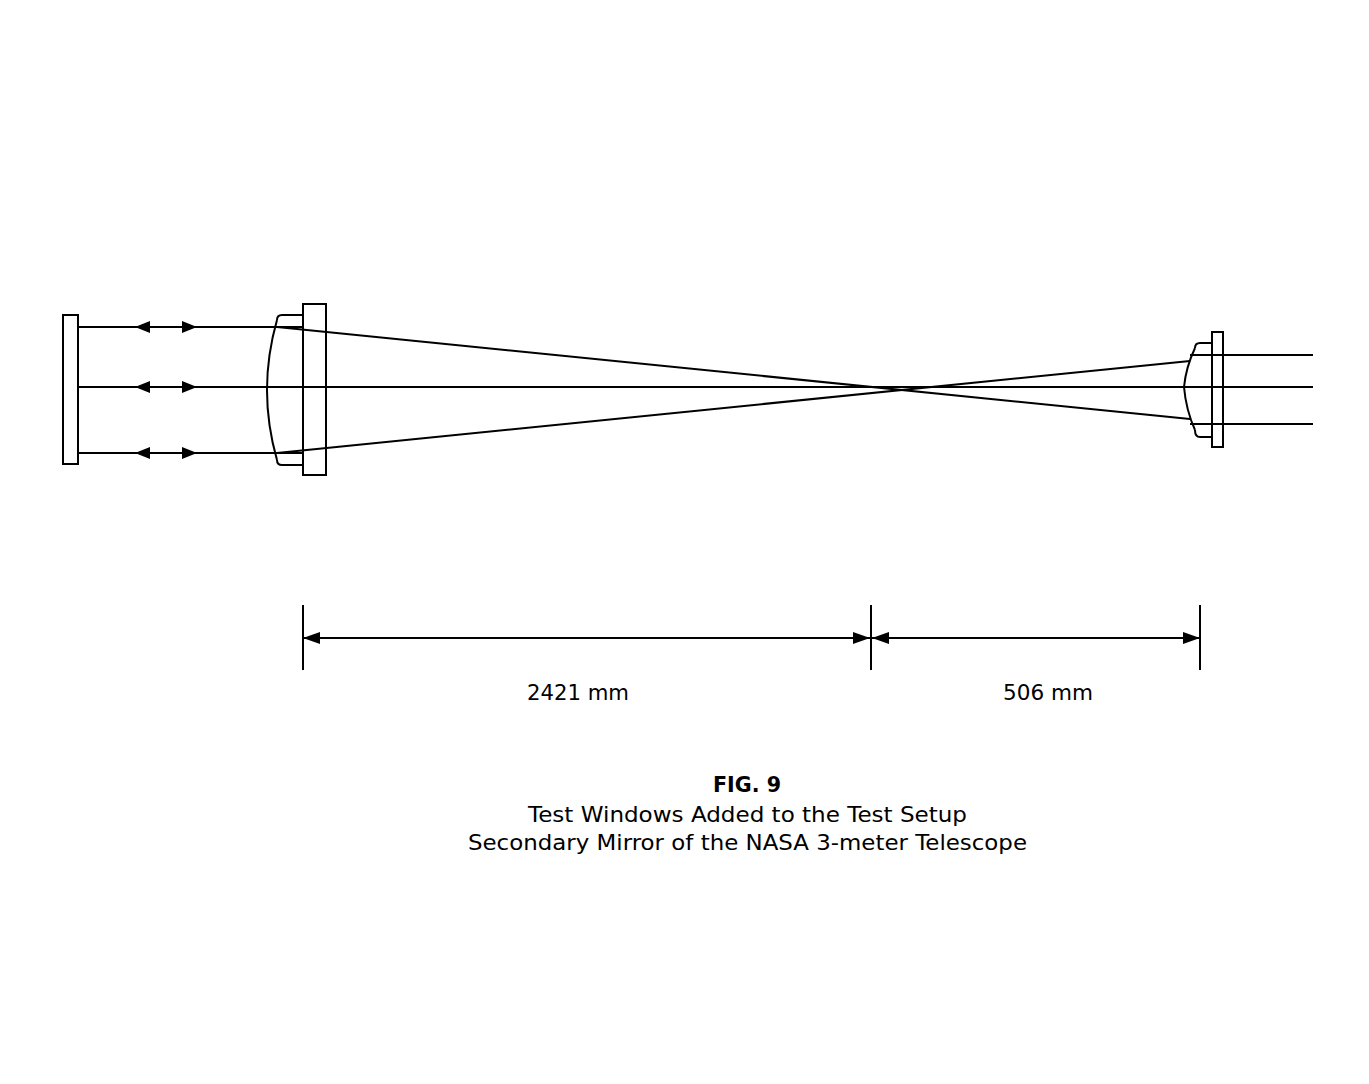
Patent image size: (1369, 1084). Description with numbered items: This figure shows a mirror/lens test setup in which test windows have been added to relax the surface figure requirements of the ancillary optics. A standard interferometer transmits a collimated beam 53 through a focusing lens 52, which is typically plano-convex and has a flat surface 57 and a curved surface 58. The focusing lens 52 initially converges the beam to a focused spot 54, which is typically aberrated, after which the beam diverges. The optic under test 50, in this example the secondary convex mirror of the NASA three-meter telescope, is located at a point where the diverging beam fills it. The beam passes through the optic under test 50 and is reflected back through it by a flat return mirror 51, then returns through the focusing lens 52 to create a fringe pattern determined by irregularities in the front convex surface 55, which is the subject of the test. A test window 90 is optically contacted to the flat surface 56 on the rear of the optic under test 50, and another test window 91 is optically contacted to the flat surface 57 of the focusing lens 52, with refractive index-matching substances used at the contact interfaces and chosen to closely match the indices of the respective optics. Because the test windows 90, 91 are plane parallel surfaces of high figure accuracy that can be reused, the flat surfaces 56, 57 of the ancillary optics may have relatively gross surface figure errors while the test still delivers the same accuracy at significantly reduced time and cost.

The optic under test 50 is at (290, 360).
The return flat 51 is at (73, 313).
The focusing lens 52 is at (1140, 416).
The collimated beam 53 is at (1275, 353).
The focused spot 54 is at (870, 388).
The front convex surface 55 is at (275, 455).
The flat surface on the rear of the optic under test 56 is at (303, 352).
The flat surface of the focusing lens 57 is at (1208, 398).
The curved surface of the focusing lens 58 is at (1193, 353).
The test window 90 is at (335, 298).
The test window 91 is at (1228, 437).